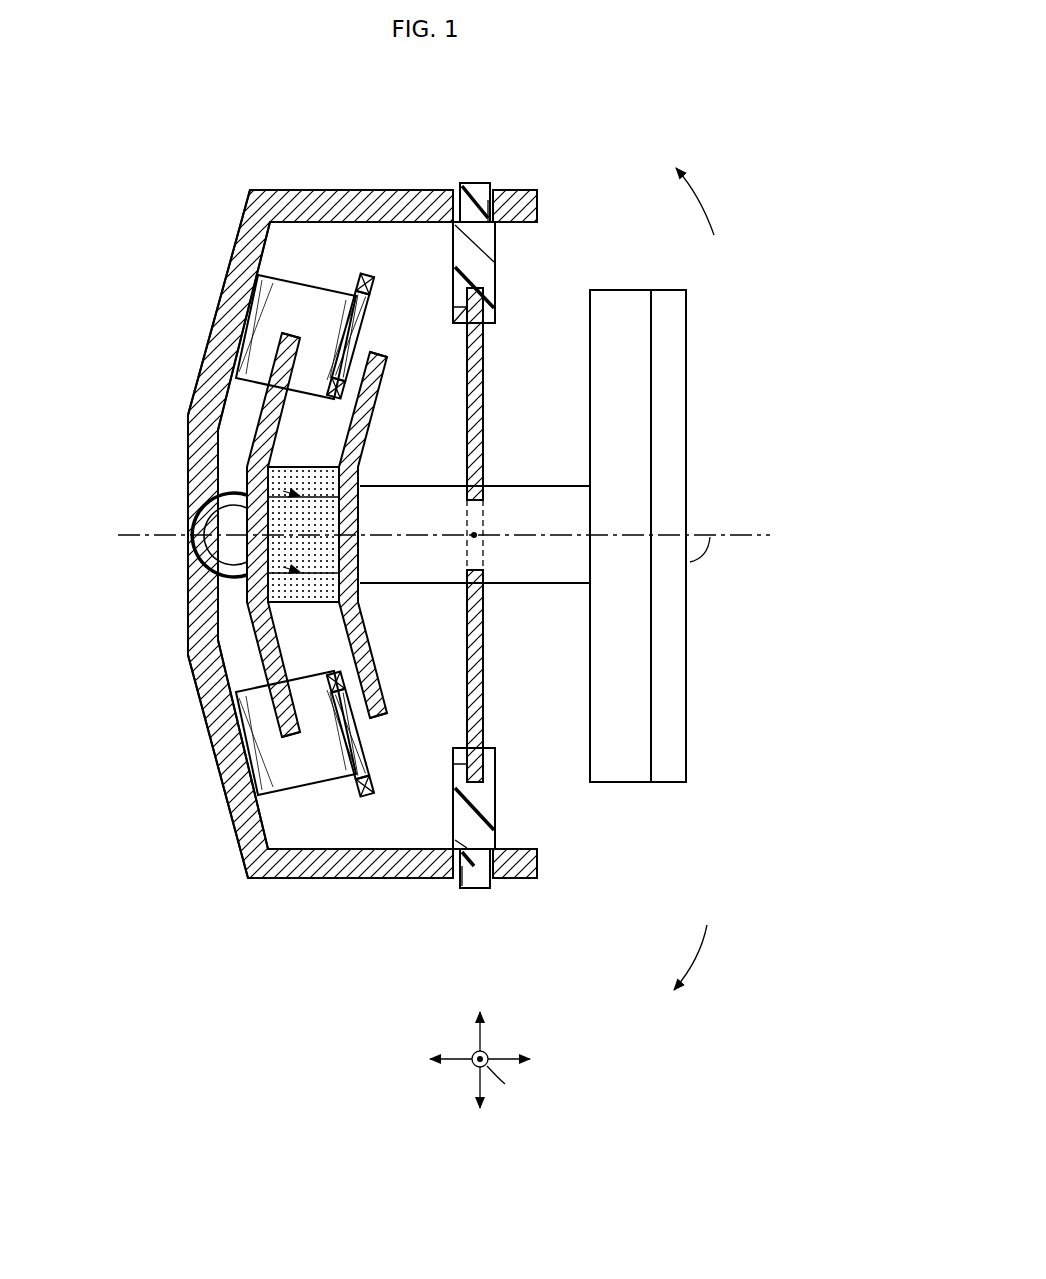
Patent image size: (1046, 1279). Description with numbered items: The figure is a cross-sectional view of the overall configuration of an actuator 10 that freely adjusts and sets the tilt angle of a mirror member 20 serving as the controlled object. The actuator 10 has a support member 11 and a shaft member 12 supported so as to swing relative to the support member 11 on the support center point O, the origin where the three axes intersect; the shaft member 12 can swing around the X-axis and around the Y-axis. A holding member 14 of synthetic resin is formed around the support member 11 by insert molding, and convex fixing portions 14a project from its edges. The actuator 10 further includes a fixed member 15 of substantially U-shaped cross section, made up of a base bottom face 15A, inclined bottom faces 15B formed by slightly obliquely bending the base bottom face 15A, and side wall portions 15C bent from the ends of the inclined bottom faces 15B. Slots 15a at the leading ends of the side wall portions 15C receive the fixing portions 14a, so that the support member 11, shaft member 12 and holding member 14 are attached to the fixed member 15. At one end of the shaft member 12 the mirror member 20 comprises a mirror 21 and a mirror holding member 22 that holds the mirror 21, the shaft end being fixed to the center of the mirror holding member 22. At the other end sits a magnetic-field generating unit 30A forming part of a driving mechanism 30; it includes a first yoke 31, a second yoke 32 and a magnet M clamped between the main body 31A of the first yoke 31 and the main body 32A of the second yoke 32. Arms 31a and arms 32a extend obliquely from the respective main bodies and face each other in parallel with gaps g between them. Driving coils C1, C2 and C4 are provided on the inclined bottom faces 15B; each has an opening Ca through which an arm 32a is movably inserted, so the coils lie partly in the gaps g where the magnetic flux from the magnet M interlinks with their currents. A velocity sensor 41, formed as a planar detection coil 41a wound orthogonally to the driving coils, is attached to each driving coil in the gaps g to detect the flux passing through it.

The actuator 10 is at (614, 122).
The support member 11 is at (488, 372).
The shaft member 12 is at (425, 498).
The holding member 14 is at (492, 262).
The fixing portions 14a is at (493, 189).
The fixed member 15 is at (234, 228).
The base bottom face 15A is at (198, 606).
The inclined bottom faces 15B is at (233, 286).
The side wall portions 15C is at (382, 190).
The slots 15a is at (461, 186).
The mirror member 20 is at (590, 843).
The mirror 21 is at (665, 782).
The mirror holding member 22 is at (612, 782).
The driving mechanism 30 is at (377, 243).
The magnetic-field generating unit 30A is at (425, 432).
The first yoke 31 is at (372, 624).
The main body of first yoke 31A is at (345, 590).
The arms of first yoke 31a is at (386, 357).
The second yoke 32 is at (244, 470).
The main body of second yoke 32A is at (257, 548).
The arms of second yoke 32a is at (296, 333).
The velocity sensor 41 is at (368, 326).
The detection coil 41a is at (373, 284).
The driving coil C1 is at (237, 333).
The driving coil C2 is at (240, 745).
The driving coil C4 is at (232, 513).
The opening Ca is at (306, 355).
The magnet M is at (310, 602).
The gaps g is at (382, 438).
The support center point O is at (475, 533).